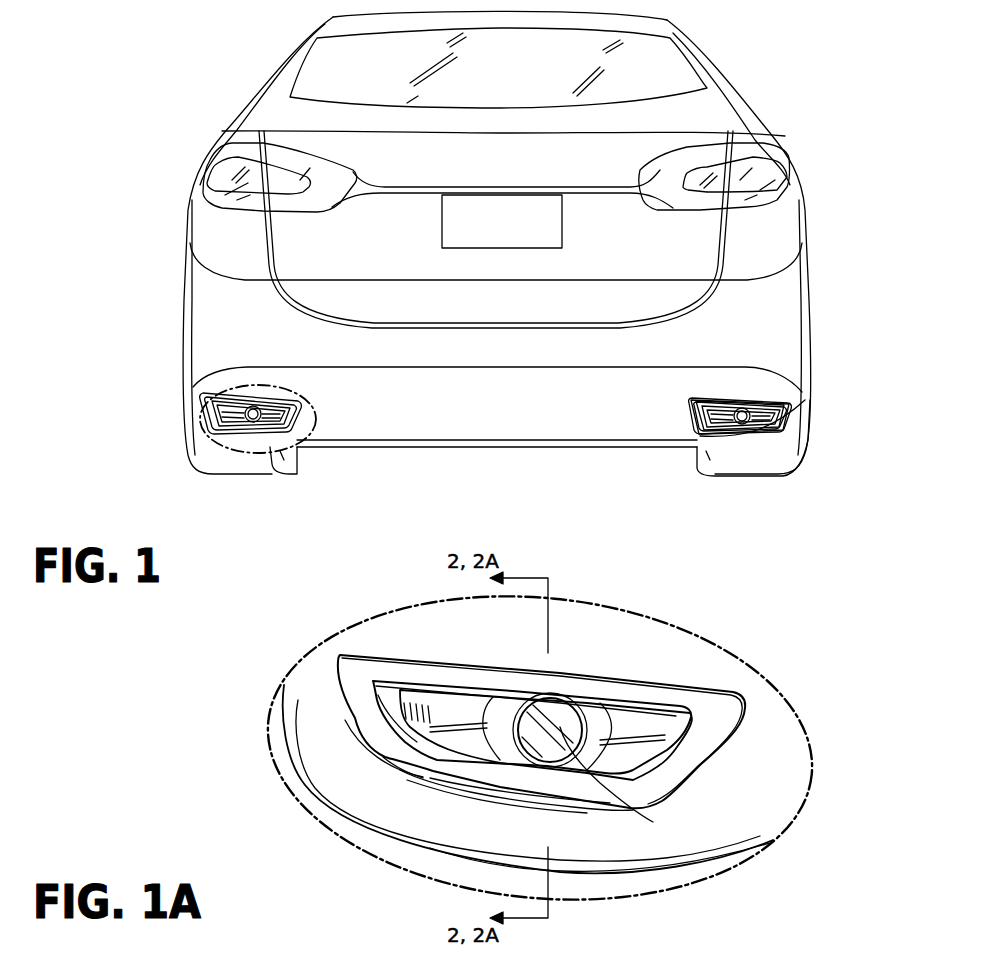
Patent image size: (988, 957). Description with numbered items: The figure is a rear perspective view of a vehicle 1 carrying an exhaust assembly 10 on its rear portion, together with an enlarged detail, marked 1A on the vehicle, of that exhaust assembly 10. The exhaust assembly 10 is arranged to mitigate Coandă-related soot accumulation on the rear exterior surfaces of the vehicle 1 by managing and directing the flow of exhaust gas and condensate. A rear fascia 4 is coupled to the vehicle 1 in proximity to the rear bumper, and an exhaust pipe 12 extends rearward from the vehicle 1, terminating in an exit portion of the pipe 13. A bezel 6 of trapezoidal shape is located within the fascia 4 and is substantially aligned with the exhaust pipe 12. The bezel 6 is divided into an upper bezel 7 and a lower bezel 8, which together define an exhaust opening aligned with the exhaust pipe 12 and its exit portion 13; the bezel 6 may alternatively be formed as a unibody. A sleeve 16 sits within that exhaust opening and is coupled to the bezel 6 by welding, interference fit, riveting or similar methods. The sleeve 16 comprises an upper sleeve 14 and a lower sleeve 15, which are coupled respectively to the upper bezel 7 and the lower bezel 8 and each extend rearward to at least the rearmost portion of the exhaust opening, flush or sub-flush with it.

In FIG. 1, the vehicle 1 is at (743, 89).
In FIG. 1, the detail region of FIG. 1A is at (203, 436).
In FIG. 1, the rear fascia 4 is at (750, 402).
In FIG. 1A, the rear fascia 4 is at (617, 661).
In FIG. 1, the bezel 6 is at (790, 402).
In FIG. 1A, the bezel 6 is at (742, 705).
In FIG. 1A, the upper bezel 7 is at (677, 693).
In FIG. 1A, the lower bezel 8 is at (587, 793).
In FIG. 1, the exhaust assembly 10 is at (763, 435).
In FIG. 1A, the exhaust assembly 10 is at (745, 768).
In FIG. 1, the exhaust pipe 12 is at (203, 408).
In FIG. 1A, the exhaust pipe 12 is at (653, 822).
In FIG. 1A, the exit portion of the pipe 13 is at (595, 705).
In FIG. 1A, the upper sleeve 14 is at (421, 686).
In FIG. 1A, the lower sleeve 15 is at (420, 740).
In FIG. 1A, the sleeve 16 is at (398, 747).